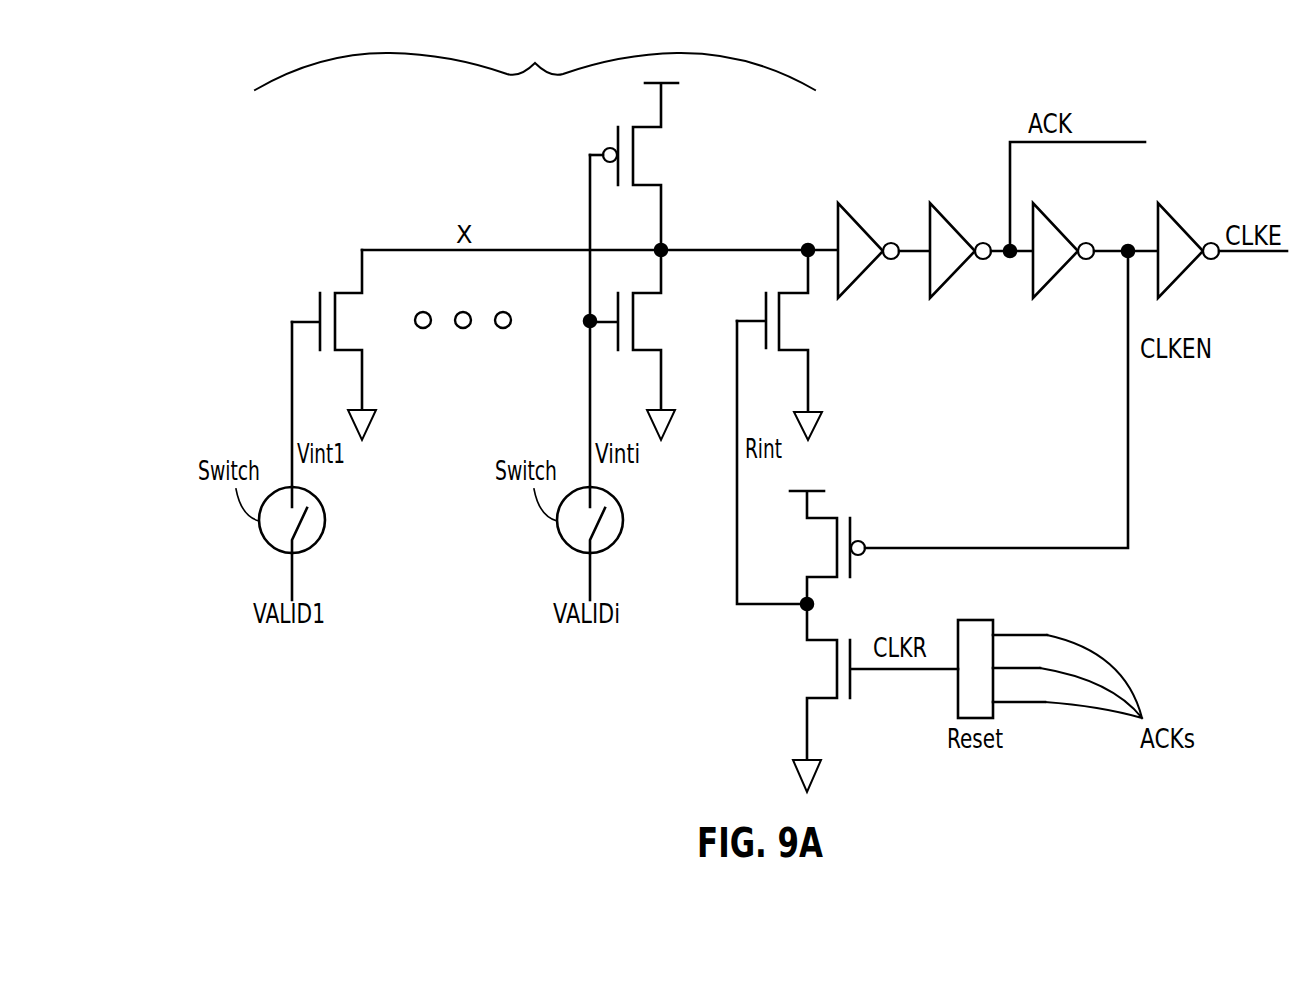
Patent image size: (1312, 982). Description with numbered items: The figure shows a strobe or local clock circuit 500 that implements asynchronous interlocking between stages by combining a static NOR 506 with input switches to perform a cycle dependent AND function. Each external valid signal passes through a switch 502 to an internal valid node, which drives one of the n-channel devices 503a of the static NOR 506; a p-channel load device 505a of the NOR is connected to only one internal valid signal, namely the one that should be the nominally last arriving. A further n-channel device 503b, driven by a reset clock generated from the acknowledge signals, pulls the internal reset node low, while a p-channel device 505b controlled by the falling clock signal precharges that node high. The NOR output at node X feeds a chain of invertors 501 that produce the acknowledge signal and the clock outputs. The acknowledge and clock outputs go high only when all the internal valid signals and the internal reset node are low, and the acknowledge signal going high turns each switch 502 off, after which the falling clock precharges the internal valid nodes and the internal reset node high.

The strobe circuit 500 is at (383, 229).
The invertor 501 is at (943, 208).
The switch 502 is at (327, 518).
The n-channel device 503a is at (318, 310).
The n-channel device 503b is at (818, 668).
The p-channel load device 505a is at (657, 157).
The p-channel device 505b is at (858, 528).
The static NOR 506 is at (535, 61).